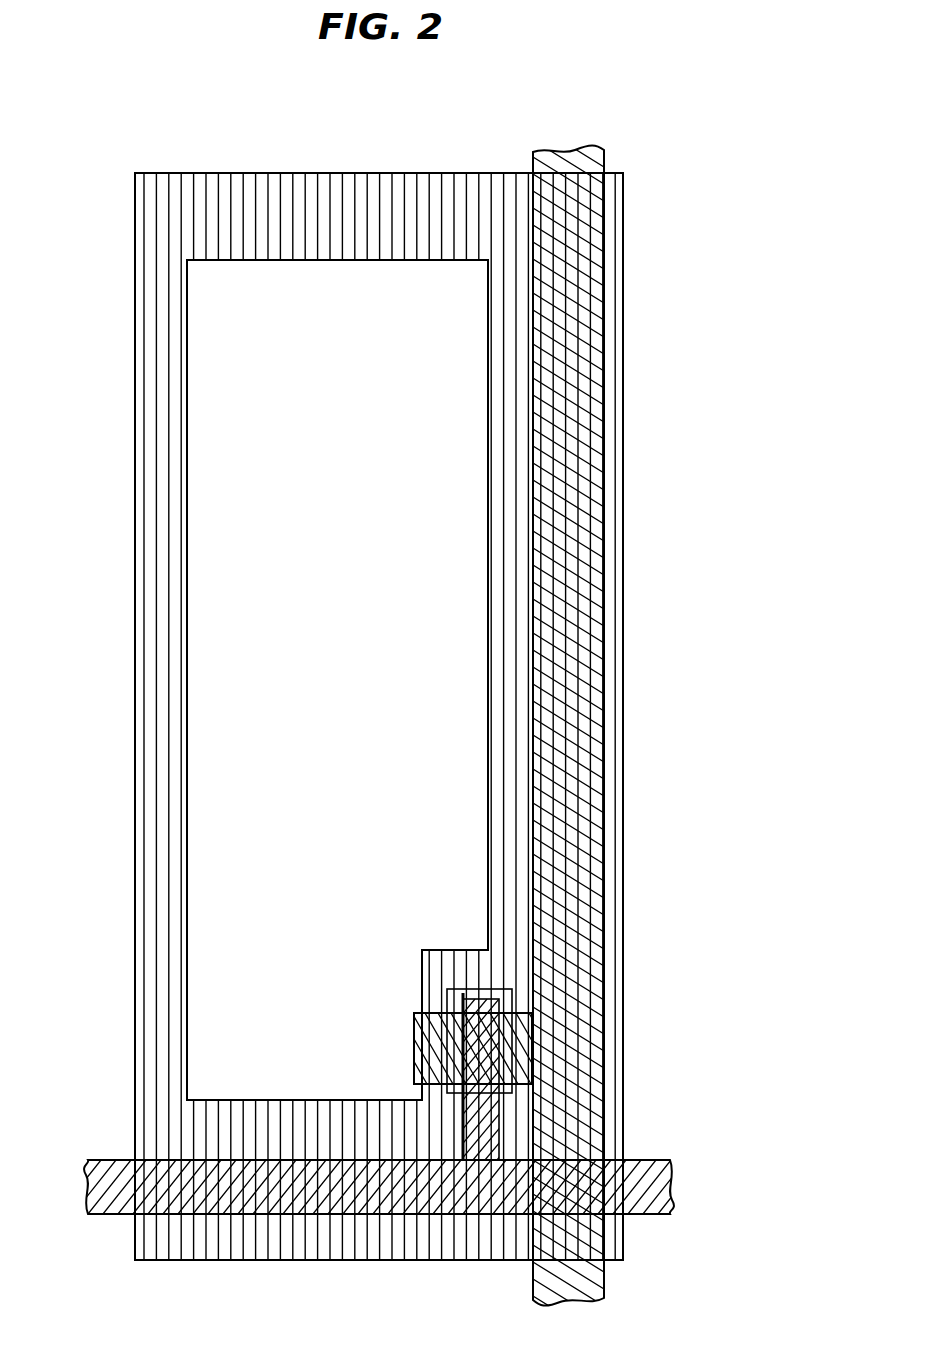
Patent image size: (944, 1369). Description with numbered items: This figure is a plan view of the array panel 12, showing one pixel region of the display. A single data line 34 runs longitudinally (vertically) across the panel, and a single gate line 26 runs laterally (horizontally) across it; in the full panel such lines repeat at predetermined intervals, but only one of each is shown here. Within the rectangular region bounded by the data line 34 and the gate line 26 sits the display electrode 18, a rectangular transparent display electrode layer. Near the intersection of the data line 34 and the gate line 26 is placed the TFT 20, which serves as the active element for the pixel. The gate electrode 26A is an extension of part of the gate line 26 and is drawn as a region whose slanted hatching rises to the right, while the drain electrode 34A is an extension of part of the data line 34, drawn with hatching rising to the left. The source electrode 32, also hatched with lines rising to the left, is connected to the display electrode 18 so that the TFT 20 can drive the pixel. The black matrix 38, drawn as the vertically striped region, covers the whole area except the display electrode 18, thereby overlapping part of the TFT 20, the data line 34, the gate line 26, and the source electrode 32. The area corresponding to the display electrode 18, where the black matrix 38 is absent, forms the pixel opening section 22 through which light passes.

The pixel (thin film transistor array unit) 12 is at (668, 582).
The display electrode 18 is at (232, 497).
The TFT 20 is at (463, 988).
The pixel opening section 22 is at (325, 283).
The gate line 26 is at (640, 1162).
The gate electrode 26A is at (463, 1120).
The source electrode 32 is at (447, 1013).
The data line 34 is at (604, 1278).
The drain electrode 34A is at (520, 1083).
The black matrix 38 is at (625, 312).